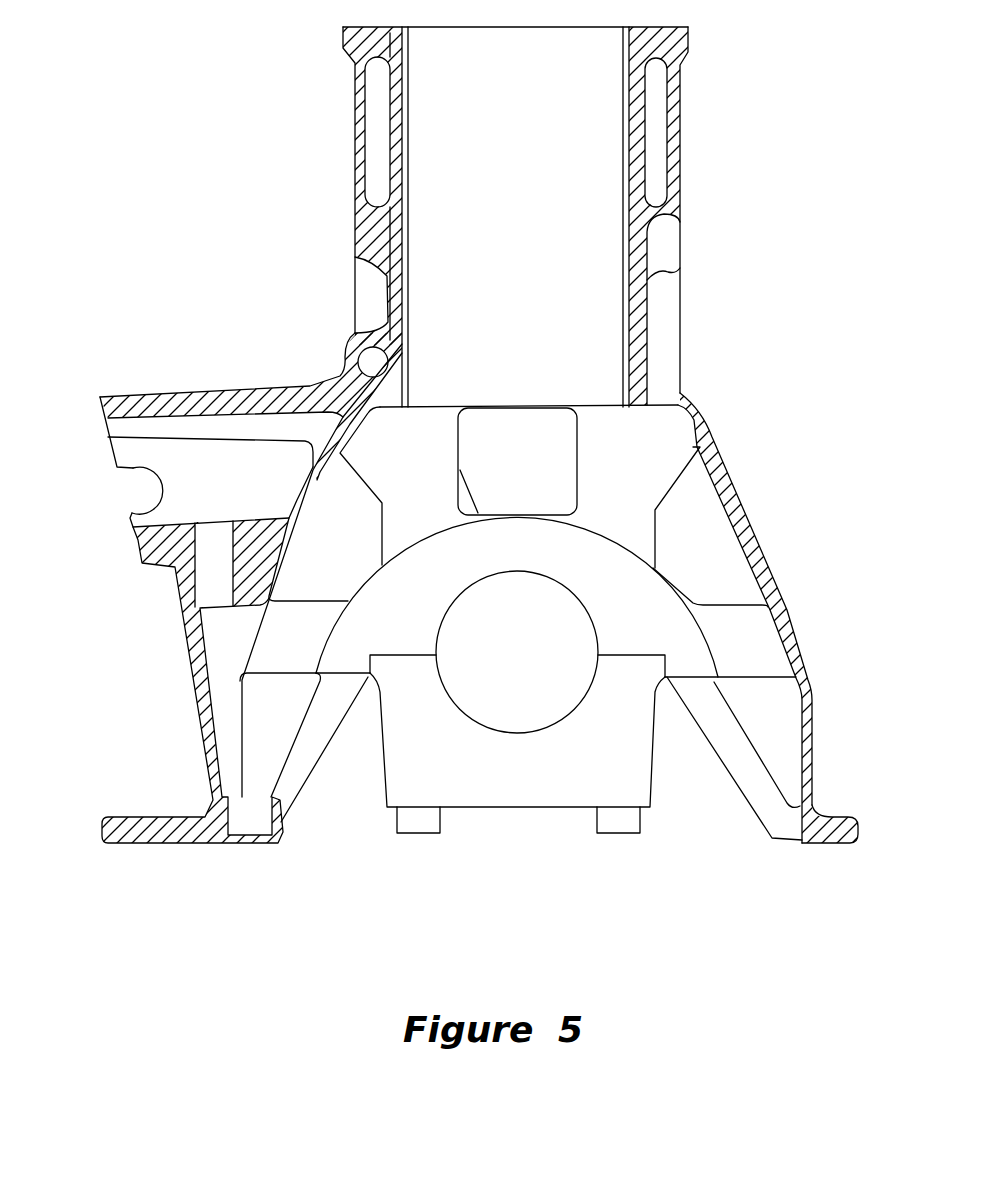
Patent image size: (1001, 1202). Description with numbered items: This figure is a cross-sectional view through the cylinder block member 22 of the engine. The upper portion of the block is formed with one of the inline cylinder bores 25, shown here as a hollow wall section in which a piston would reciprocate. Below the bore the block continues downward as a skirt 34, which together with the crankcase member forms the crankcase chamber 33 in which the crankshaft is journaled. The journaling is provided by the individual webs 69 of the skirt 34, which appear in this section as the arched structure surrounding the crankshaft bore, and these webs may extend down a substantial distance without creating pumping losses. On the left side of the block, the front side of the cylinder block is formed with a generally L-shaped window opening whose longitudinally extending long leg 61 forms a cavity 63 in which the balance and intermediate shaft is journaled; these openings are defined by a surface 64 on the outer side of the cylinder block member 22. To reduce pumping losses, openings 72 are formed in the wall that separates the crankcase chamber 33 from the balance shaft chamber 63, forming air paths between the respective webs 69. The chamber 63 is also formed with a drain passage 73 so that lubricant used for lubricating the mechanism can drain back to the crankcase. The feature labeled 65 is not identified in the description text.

The cylinder block member 22 is at (688, 96).
The cylinder bores 25 is at (410, 240).
The crankcase chamber 33 is at (723, 535).
The skirt 34 is at (790, 607).
The long leg 61 is at (131, 529).
The cavity 63 is at (197, 447).
The surface 64 is at (97, 400).
The notch 65 is at (130, 487).
The webs 69 is at (663, 443).
The openings 72 is at (305, 488).
The drain passage 73 is at (200, 553).